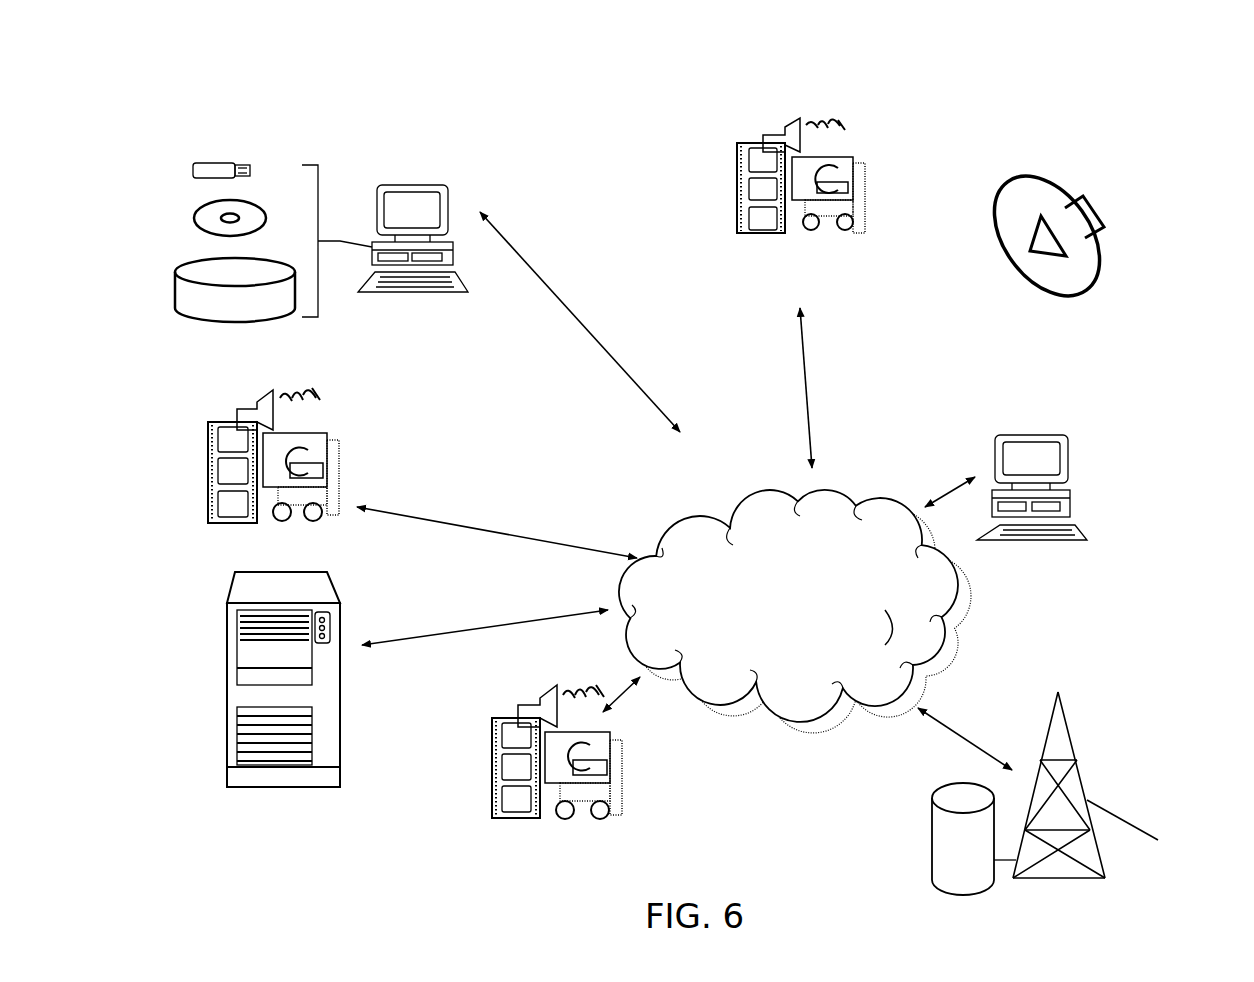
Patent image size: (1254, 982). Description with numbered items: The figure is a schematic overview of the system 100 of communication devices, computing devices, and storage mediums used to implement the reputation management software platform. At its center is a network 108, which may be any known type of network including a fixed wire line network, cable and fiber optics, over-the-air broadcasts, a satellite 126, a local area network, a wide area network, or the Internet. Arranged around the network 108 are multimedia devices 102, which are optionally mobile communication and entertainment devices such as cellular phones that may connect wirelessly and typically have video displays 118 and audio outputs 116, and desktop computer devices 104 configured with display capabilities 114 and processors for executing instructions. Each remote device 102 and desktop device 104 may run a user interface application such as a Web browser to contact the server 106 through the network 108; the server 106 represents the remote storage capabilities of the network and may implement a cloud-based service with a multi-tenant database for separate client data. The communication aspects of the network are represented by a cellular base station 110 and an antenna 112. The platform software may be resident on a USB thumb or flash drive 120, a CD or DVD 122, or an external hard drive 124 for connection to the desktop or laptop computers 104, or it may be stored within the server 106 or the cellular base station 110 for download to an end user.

The system 100 is at (1028, 132).
The multimedia device 102 is at (496, 423).
The desktop computer device 104 is at (377, 180).
The server 106 is at (240, 692).
The network 108 is at (730, 713).
The cellular base station 110 is at (933, 855).
The antenna 112 is at (1112, 785).
The display capabilities 114 is at (420, 188).
The audio output 116 is at (738, 210).
The video display 118 is at (785, 135).
The USB thumb or flash drive 120 is at (213, 162).
The CD or DVD 122 is at (207, 213).
The external hard drive 124 is at (215, 268).
The satellite 126 is at (1087, 197).